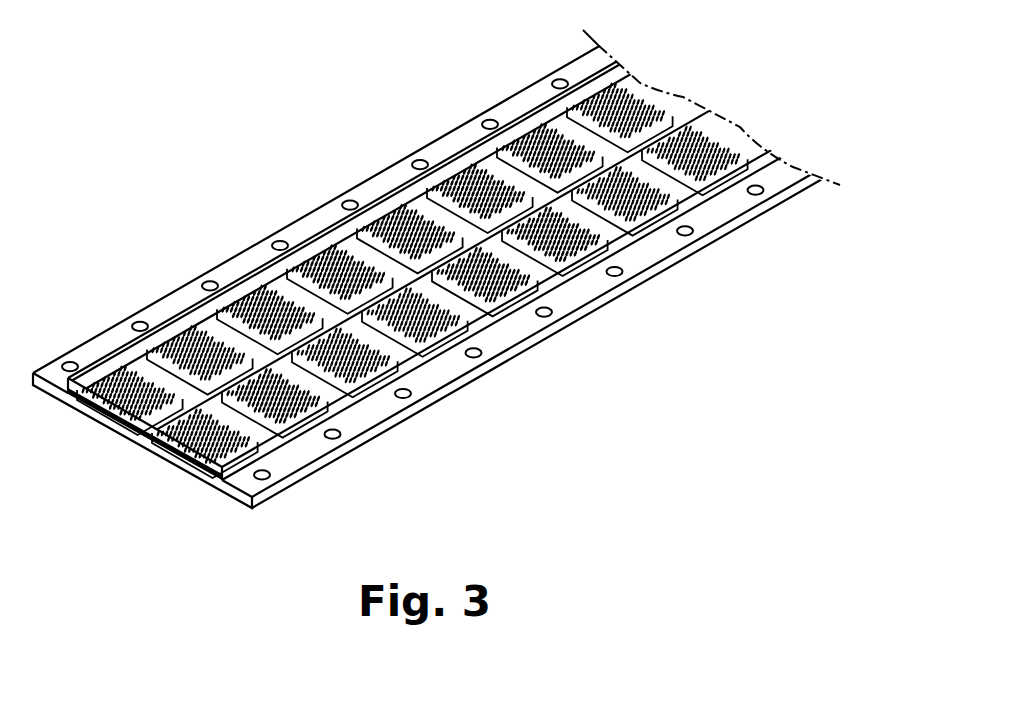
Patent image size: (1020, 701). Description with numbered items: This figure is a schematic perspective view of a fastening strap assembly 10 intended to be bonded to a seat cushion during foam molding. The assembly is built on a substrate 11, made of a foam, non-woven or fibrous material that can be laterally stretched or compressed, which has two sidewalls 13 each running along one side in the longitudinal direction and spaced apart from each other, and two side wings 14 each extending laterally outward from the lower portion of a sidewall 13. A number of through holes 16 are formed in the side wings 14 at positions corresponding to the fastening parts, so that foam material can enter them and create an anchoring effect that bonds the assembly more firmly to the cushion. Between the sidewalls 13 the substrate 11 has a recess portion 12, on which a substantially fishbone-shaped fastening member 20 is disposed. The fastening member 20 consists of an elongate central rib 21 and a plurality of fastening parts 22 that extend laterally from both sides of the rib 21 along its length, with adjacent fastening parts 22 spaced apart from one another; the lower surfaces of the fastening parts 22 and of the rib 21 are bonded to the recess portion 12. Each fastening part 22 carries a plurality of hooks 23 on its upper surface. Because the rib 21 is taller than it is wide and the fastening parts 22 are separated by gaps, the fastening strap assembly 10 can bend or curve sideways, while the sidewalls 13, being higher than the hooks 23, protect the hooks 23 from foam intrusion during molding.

The fastening strap assembly 10 is at (224, 87).
The substrate 11 is at (107, 427).
The recess portion 12 is at (132, 368).
The sidewall 13 is at (302, 217).
The side wing 14 is at (148, 315).
The through hole 16 is at (208, 284).
The fastening member 20 is at (683, 110).
The central rib 21 is at (133, 442).
The fastening part 22 is at (282, 272).
The hook 23 is at (400, 213).